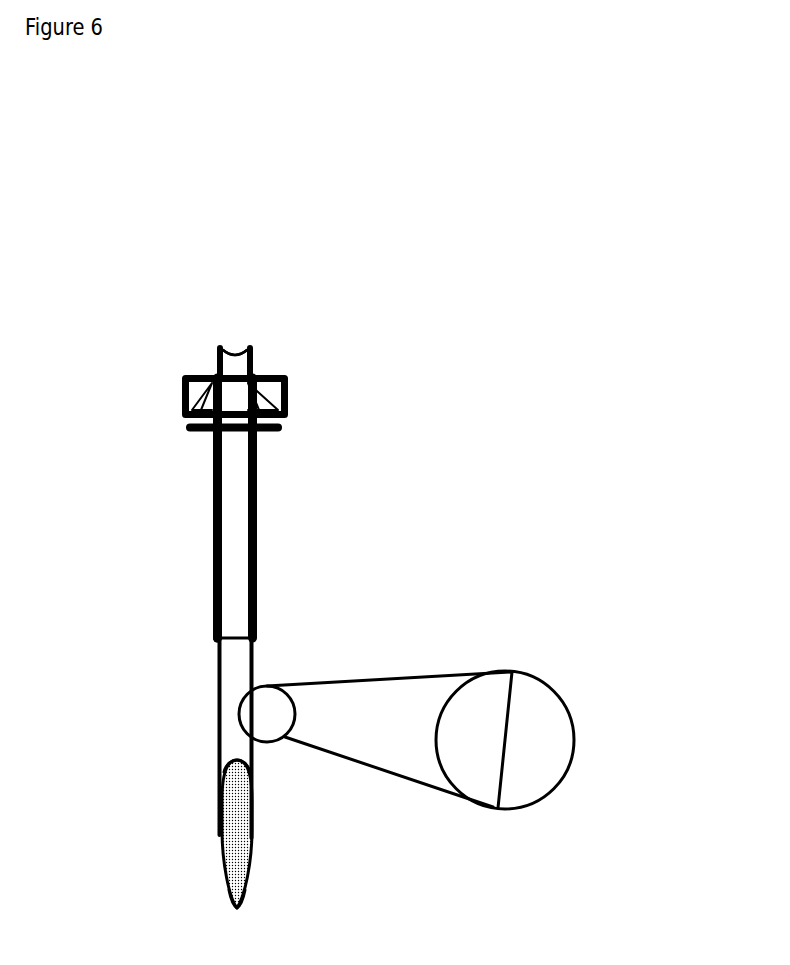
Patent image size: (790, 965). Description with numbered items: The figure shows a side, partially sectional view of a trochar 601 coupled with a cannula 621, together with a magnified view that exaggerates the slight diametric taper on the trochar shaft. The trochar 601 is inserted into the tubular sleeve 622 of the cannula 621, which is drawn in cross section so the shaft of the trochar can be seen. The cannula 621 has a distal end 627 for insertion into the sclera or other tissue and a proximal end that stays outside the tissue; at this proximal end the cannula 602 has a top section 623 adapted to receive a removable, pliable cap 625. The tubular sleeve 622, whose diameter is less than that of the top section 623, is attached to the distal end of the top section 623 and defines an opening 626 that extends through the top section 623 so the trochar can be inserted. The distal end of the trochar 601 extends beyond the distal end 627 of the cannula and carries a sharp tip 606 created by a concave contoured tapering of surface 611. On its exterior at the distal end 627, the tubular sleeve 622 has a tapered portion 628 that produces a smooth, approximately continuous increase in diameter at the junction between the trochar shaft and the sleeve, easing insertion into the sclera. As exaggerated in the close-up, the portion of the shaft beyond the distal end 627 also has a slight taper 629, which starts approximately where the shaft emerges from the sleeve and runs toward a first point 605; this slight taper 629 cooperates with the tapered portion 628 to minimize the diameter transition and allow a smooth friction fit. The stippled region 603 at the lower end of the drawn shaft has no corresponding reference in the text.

The trochar 601 is at (253, 353).
The cannula 602 is at (280, 427).
The bulb / tip body 603 is at (217, 828).
The first point 605 is at (237, 760).
The sharp tip 606 is at (233, 910).
The surface 611 is at (240, 825).
The cannula 621 is at (263, 497).
The tubular sleeve 622 is at (257, 555).
The top section 623 is at (182, 407).
The pliable cap 625 is at (202, 375).
The opening 626 is at (240, 518).
The distal end 627 is at (257, 640).
The tapered portion 628 is at (213, 628).
The slight taper 629 is at (507, 757).